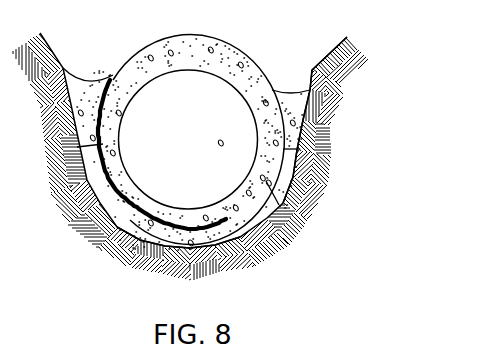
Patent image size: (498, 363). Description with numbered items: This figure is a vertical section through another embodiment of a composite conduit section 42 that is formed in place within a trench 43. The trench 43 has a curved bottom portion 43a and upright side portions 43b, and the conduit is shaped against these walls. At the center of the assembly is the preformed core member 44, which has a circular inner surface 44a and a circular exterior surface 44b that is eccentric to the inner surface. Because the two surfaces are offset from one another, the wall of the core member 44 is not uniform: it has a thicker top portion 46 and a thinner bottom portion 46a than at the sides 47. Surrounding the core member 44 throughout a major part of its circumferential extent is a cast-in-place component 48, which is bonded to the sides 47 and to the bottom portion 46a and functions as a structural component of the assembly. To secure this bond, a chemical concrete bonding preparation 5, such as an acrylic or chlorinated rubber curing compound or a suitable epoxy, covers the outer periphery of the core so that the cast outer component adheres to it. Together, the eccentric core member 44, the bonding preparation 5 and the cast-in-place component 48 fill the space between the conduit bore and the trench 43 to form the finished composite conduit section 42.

The chemical concrete bonding preparation 5 is at (87, 190).
The composite conduit section 42 is at (243, 38).
The trench 43 is at (43, 39).
The curved bottom portion 43a is at (148, 249).
The upright side portions 43b is at (308, 113).
The core member 44 is at (300, 150).
The circular inner surface 44a is at (125, 168).
The circular exterior surface 44b is at (268, 183).
The thicker top portion 46 is at (197, 40).
The thinner bottom portion 46a is at (226, 219).
The sides 47 is at (77, 147).
The cast-in-place component 48 is at (77, 101).